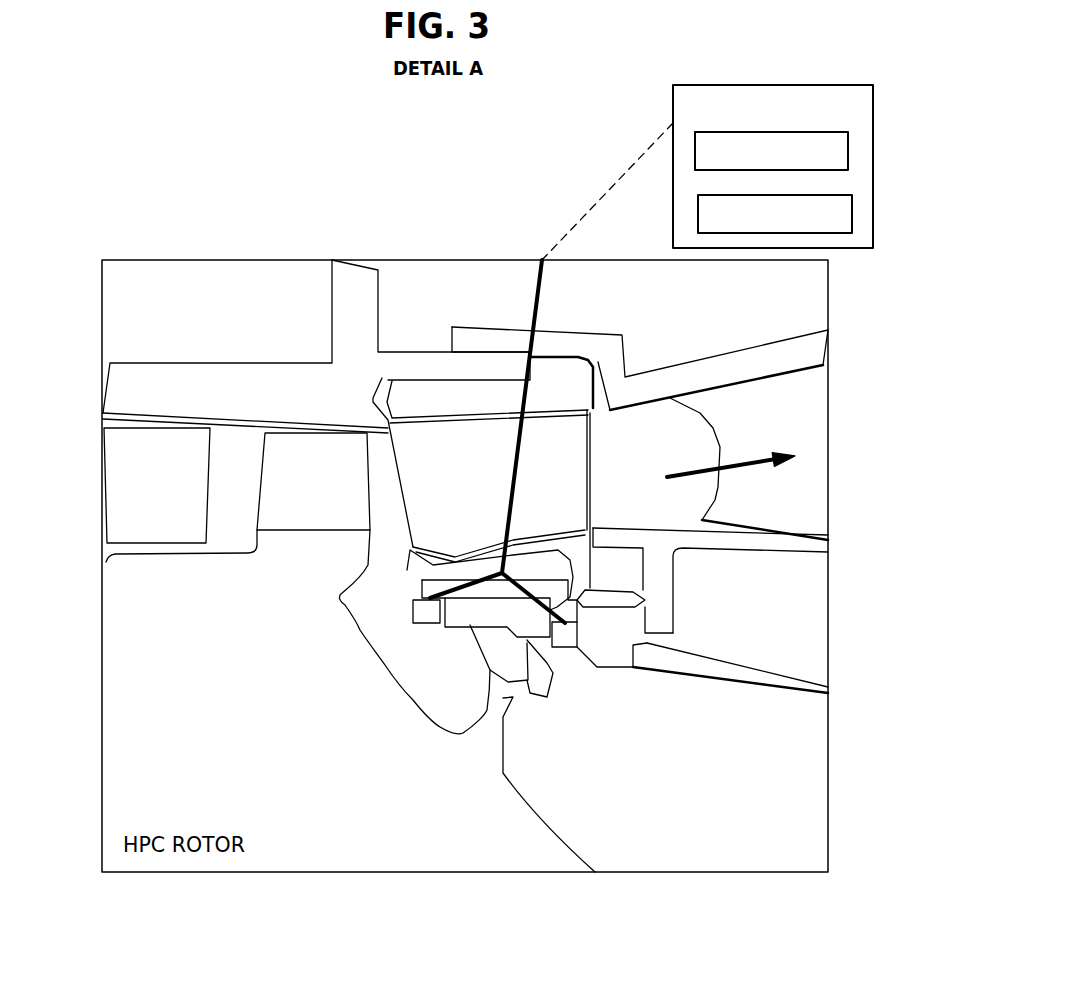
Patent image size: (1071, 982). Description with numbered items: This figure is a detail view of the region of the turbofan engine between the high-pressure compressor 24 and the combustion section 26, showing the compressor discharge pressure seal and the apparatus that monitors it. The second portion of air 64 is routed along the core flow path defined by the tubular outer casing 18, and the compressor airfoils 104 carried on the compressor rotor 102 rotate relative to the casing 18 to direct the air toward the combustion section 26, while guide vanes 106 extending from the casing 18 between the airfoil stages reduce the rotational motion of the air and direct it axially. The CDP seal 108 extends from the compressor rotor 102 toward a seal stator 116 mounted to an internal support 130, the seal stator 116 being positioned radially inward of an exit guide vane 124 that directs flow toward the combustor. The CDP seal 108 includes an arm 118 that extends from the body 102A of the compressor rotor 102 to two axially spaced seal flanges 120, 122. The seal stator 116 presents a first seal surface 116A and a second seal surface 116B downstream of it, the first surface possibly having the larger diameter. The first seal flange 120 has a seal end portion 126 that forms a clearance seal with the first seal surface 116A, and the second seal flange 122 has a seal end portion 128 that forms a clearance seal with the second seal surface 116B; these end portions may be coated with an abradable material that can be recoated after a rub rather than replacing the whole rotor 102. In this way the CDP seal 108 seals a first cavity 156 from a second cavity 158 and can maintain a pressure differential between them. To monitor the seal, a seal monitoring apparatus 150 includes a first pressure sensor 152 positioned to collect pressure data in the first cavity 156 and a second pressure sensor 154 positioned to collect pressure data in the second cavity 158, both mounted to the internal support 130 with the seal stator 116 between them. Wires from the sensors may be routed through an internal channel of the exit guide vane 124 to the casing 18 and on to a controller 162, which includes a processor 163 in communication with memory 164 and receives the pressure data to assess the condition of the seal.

The tubular outer casing 18 is at (143, 360).
The high-pressure compressor 24 is at (246, 410).
The combustion section 26 is at (782, 405).
The second portion of air 64 is at (693, 477).
The compressor rotor 102 is at (286, 840).
The body of the compressor rotor 102A is at (347, 808).
The compressor airfoils 104 is at (177, 437).
The guide vanes 106 is at (127, 493).
The CDP seal 108 is at (672, 786).
The seal stator 116 is at (530, 620).
The first seal surface 116A is at (463, 623).
The second seal surface 116B is at (543, 637).
The arm 118 is at (503, 727).
The first seal flange 120 is at (480, 625).
The second seal flange 122 is at (553, 670).
The exit guide vane 124 is at (555, 432).
The seal end portion of first seal flange 126 is at (492, 672).
The seal end portion of second seal flange 128 is at (530, 700).
The internal support 130 is at (793, 677).
The seal monitoring apparatus 150 is at (541, 542).
The first pressure sensor 152 is at (404, 598).
The second pressure sensor 154 is at (583, 630).
The first cavity 156 is at (370, 588).
The second cavity 158 is at (664, 841).
The controller 162 is at (673, 162).
The processor 163 is at (848, 148).
The memory 164 is at (852, 218).